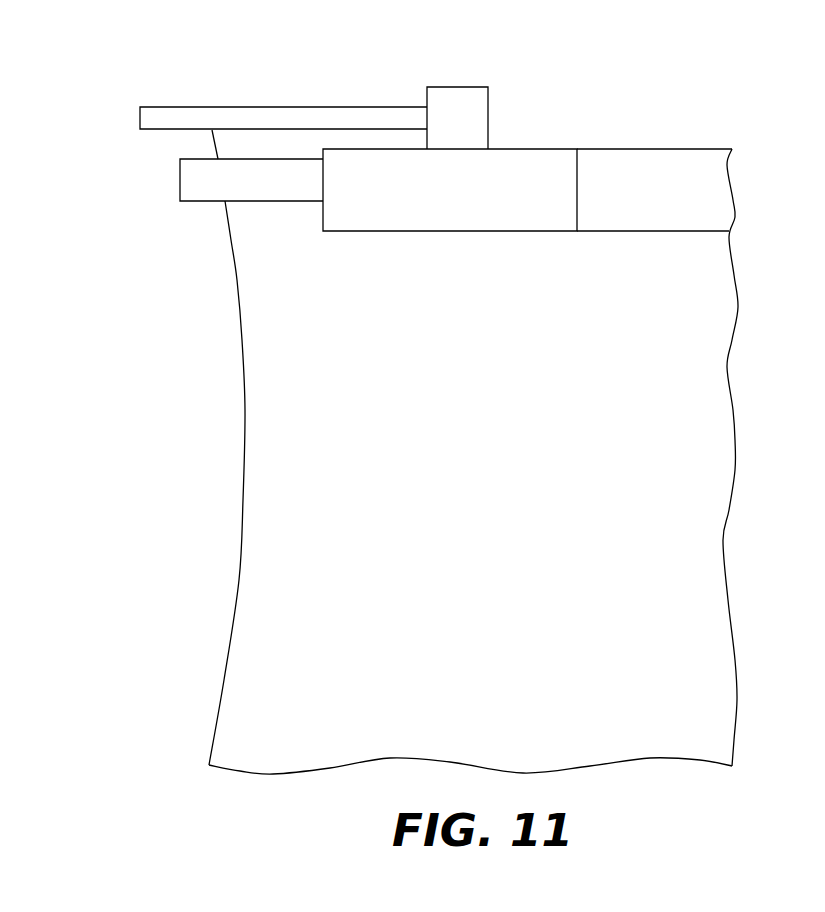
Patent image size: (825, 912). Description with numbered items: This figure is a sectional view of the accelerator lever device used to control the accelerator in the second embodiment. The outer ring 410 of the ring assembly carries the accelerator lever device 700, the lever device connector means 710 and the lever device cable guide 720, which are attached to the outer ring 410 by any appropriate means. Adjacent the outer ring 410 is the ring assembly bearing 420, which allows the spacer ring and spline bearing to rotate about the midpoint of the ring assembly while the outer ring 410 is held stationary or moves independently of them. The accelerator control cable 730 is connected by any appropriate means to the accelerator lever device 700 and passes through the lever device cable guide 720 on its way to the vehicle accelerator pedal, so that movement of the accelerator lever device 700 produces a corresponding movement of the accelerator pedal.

The outer ring 410 is at (538, 162).
The ring assembly bearing 420 is at (631, 162).
The accelerator lever device 700 is at (145, 119).
The lever device connector means 710 is at (457, 97).
The lever device cable guide 720 is at (187, 179).
The accelerator control cable 730 is at (252, 282).